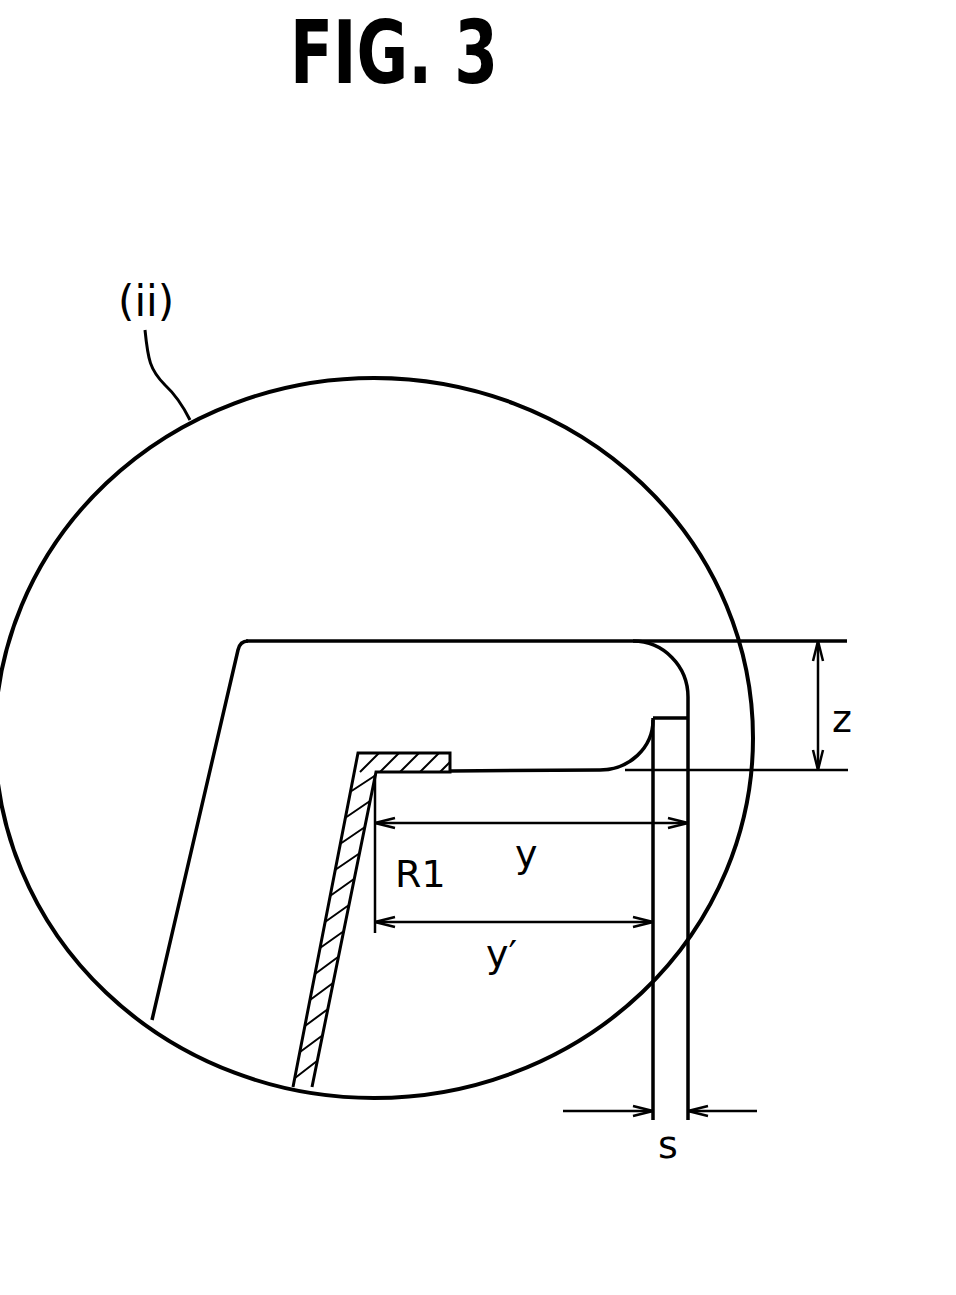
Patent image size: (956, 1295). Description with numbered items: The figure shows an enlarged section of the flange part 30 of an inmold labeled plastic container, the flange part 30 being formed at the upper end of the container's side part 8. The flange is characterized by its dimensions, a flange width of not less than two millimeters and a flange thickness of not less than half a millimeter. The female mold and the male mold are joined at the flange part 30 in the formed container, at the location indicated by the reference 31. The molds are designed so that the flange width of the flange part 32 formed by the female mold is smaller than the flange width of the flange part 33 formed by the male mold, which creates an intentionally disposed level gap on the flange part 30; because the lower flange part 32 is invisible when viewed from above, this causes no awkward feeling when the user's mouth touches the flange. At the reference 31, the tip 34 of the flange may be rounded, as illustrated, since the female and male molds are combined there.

The side part 8 is at (230, 897).
The flange part 30 is at (371, 587).
The joint of female mold and male mold 31 is at (712, 712).
The flange part formed by the female mold 32 is at (582, 728).
The flange part formed by the male mold 33 is at (485, 680).
The tip 34 is at (679, 658).